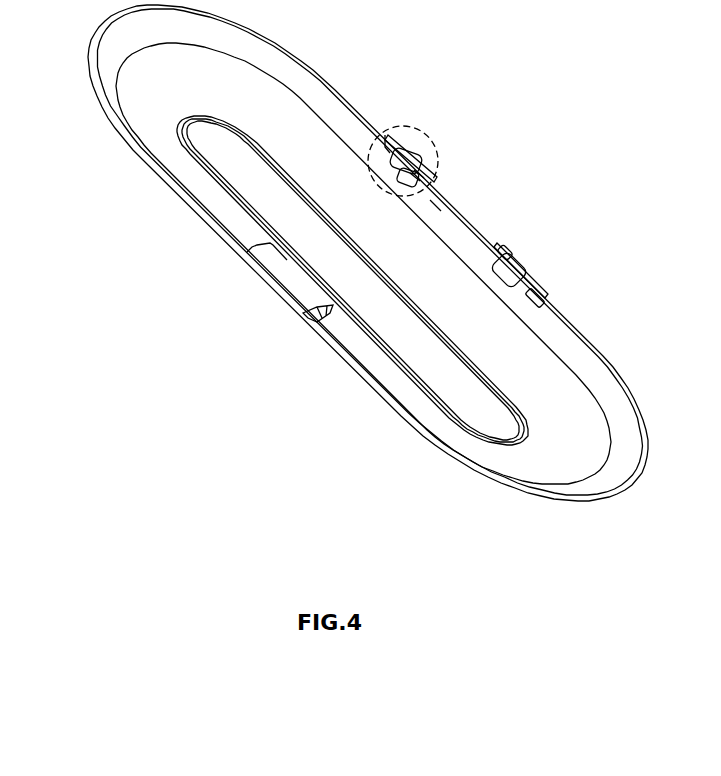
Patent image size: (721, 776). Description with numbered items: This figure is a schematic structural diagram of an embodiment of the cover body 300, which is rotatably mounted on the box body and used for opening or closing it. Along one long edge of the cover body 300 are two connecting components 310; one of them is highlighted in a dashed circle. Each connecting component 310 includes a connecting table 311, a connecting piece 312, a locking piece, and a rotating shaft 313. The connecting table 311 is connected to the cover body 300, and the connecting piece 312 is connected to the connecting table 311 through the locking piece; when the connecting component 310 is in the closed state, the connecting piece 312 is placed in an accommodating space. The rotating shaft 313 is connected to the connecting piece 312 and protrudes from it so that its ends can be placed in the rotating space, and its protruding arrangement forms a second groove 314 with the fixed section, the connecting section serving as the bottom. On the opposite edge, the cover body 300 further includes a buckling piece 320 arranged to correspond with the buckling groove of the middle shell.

The cover body 300 is at (167, 115).
The connecting component 310 is at (436, 145).
The connecting table 311 is at (543, 307).
The connecting piece 312 is at (530, 267).
The rotating shaft 313 is at (513, 245).
The second groove 314 is at (418, 178).
The buckling piece 320 is at (287, 281).